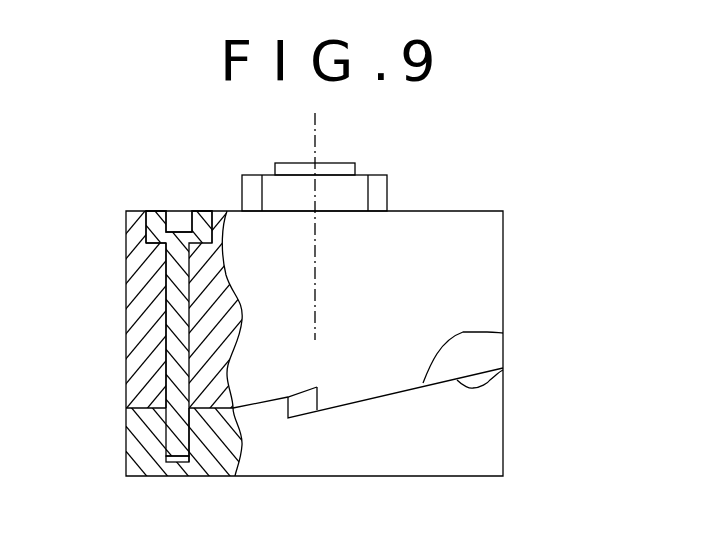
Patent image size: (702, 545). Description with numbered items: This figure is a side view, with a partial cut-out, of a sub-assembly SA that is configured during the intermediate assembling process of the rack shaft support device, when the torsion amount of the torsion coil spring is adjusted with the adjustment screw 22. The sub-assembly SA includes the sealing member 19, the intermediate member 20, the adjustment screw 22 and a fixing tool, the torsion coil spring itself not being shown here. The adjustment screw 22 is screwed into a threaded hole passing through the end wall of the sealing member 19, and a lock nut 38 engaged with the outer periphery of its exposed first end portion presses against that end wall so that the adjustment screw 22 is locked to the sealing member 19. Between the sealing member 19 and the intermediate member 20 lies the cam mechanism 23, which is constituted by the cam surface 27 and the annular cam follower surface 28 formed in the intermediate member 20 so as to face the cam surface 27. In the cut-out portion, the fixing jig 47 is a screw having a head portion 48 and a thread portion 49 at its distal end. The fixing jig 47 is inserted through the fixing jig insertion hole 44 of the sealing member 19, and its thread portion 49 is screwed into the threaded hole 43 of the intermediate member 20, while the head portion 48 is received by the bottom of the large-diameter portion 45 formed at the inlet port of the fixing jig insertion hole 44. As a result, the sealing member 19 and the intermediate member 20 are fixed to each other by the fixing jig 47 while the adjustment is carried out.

The sub-assembly SA is at (518, 220).
The sealing member 19 is at (507, 275).
The intermediate member 20 is at (508, 418).
The adjustment screw 22 is at (338, 162).
The cam mechanism 23 is at (578, 305).
The cam surface 27 is at (503, 370).
The cam follower surface 28 is at (503, 332).
The lock nut 38 is at (241, 191).
The threaded hole 43 is at (172, 457).
The fixing jig insertion hole 44 is at (166, 371).
The large-diameter portion 45 is at (150, 220).
The fixing jig 47 is at (167, 288).
The head portion 48 is at (145, 233).
The thread portion 49 is at (191, 435).